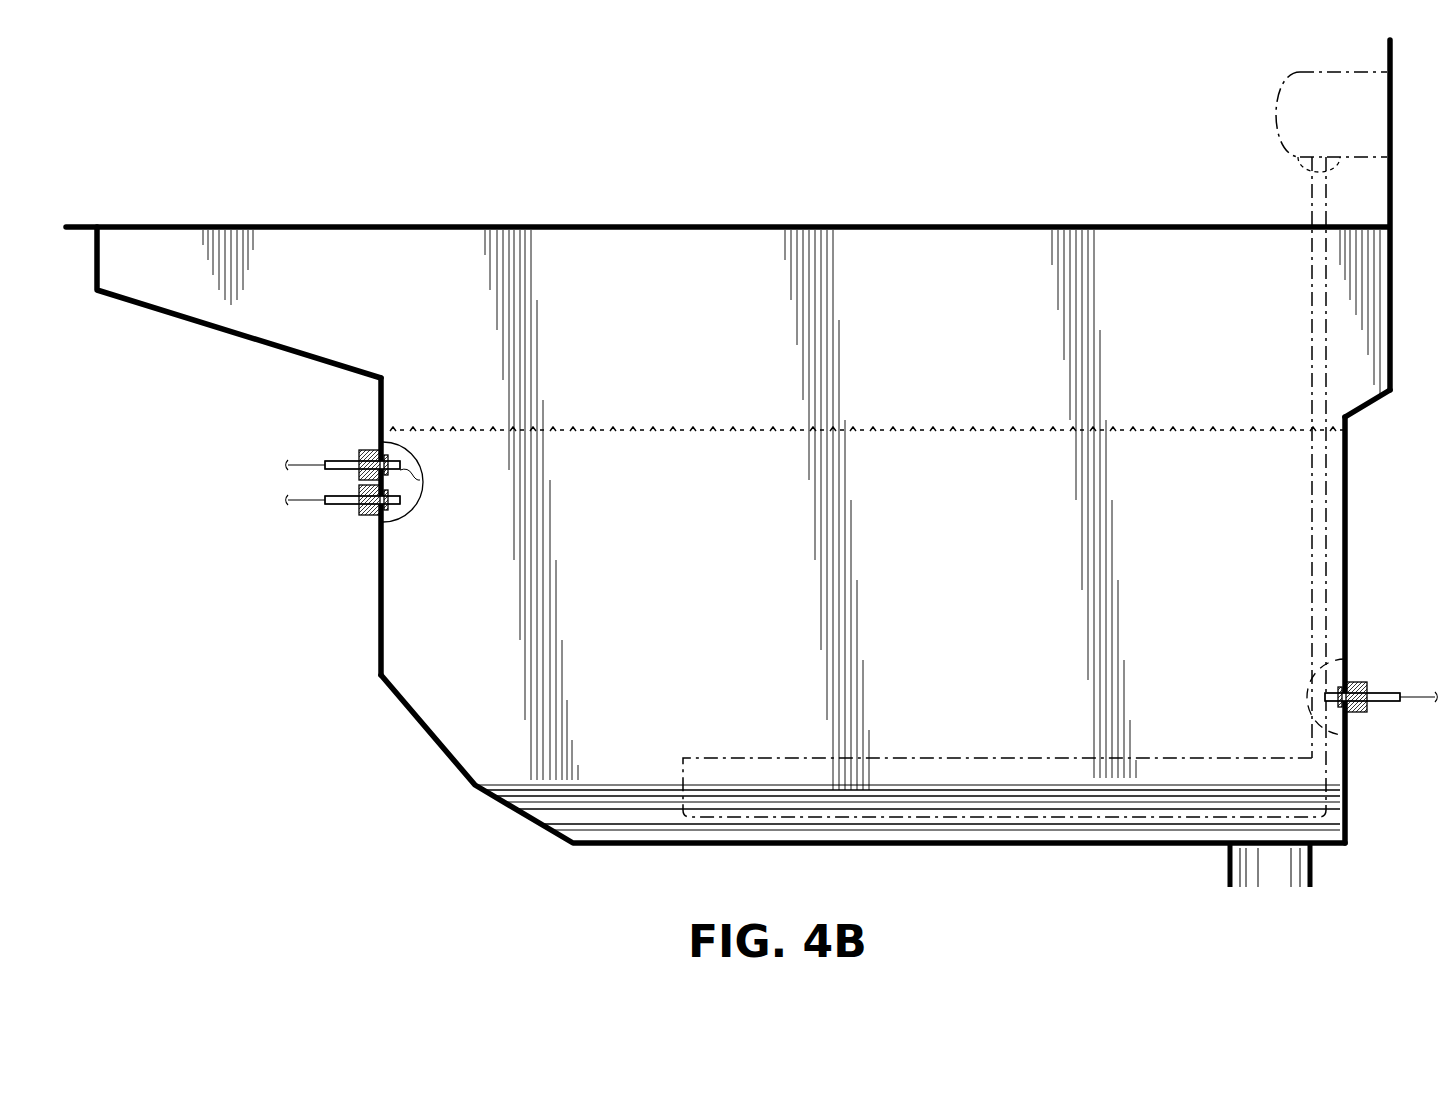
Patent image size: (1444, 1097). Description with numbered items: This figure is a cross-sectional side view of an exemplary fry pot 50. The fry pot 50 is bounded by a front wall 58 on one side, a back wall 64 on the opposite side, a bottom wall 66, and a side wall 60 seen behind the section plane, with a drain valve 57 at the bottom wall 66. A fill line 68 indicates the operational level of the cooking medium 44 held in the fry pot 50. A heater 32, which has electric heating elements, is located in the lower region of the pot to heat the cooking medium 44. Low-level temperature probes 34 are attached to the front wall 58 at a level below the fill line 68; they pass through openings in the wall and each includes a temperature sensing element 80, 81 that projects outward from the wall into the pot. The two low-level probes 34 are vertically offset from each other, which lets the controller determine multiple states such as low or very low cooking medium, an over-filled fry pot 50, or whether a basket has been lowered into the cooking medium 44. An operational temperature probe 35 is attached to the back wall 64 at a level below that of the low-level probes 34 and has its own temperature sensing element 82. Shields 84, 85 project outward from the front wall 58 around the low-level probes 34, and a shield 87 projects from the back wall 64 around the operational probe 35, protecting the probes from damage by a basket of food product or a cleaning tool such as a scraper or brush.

The fry pot 50 is at (133, 115).
The front wall 58 is at (385, 585).
The back wall 64 is at (1348, 565).
The bottom wall 66 is at (910, 846).
The fill line 68 is at (1348, 430).
The drain valve 57 is at (1315, 870).
The side wall 60 is at (950, 346).
The cooking medium 44 is at (628, 426).
The heater 32 is at (1000, 756).
The low-level temperature probes 34 is at (378, 484).
The operational temperature probe 35 is at (1349, 676).
The temperature sensing element 80 is at (402, 465).
The temperature sensing element 81 is at (402, 500).
The temperature sensing element 82 is at (1312, 704).
The shield 84 is at (398, 444).
The shield 85 is at (396, 521).
The shield 87 is at (1310, 685).